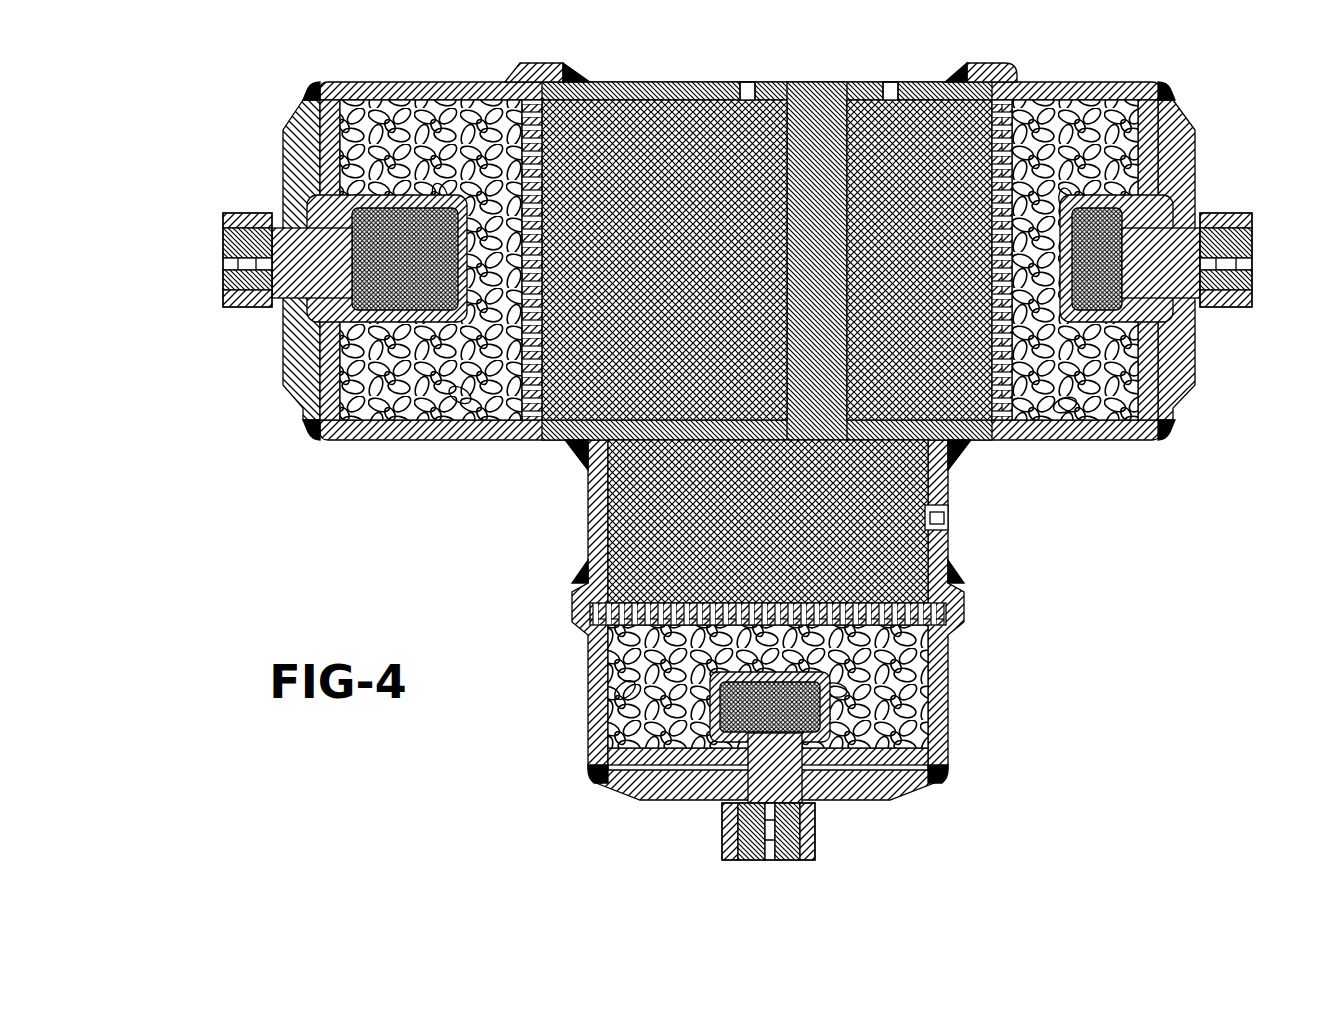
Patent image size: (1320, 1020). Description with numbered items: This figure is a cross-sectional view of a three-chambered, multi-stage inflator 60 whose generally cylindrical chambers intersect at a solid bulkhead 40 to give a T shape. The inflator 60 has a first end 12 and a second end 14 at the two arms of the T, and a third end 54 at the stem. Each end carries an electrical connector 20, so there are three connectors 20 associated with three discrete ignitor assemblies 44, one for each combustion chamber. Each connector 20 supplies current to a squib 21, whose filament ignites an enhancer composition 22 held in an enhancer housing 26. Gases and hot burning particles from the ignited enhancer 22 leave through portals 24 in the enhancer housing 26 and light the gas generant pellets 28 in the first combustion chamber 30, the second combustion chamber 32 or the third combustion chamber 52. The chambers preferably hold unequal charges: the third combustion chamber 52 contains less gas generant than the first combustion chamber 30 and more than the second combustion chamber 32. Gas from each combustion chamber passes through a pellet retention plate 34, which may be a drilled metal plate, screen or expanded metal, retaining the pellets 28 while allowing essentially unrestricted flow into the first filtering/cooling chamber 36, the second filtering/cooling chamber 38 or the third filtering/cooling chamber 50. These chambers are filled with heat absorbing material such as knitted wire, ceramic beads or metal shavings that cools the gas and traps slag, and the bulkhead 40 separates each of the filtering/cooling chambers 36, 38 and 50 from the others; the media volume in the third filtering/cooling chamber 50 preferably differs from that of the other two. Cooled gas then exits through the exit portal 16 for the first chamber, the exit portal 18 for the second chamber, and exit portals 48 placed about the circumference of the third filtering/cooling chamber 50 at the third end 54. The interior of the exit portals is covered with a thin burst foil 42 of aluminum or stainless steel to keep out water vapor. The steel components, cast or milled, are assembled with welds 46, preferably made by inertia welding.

The first end 12 is at (255, 333).
The second end 14 is at (1210, 350).
The exit portal 16 is at (762, 98).
The exit portal 18 is at (893, 98).
The electrical connector 20 is at (228, 262).
The squib 21 is at (295, 230).
The enhancer composition 22 is at (375, 218).
The portal 24 is at (425, 332).
The enhancer housing 26 is at (440, 190).
The gas generant pellets 28 is at (462, 397).
The first combustion chamber 30 is at (387, 124).
The second combustion chamber 32 is at (1104, 116).
The pellet retention plate 34 is at (522, 88).
The first filtering/cooling chamber 36 is at (583, 120).
The second filtering/cooling chamber 38 is at (915, 120).
The solid bulkhead 40 is at (812, 108).
The foil 42 is at (745, 98).
The ignitor assembly 44 is at (1232, 200).
The weld 46 is at (308, 88).
The exit portal 48 is at (946, 520).
The third filtering/cooling chamber 50 is at (915, 547).
The third combustion chamber 52 is at (906, 720).
The third end 54 is at (678, 818).
The inflator 60 is at (325, 480).